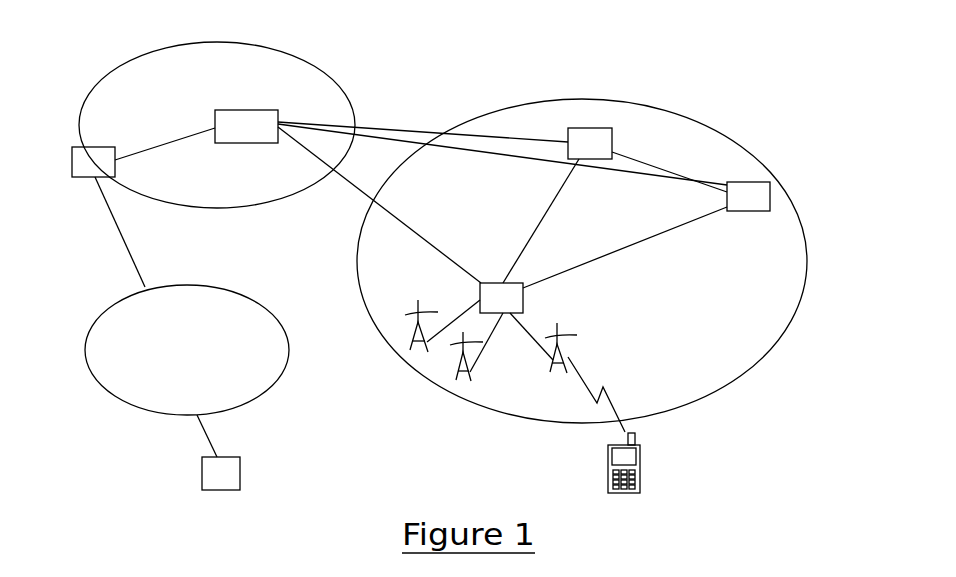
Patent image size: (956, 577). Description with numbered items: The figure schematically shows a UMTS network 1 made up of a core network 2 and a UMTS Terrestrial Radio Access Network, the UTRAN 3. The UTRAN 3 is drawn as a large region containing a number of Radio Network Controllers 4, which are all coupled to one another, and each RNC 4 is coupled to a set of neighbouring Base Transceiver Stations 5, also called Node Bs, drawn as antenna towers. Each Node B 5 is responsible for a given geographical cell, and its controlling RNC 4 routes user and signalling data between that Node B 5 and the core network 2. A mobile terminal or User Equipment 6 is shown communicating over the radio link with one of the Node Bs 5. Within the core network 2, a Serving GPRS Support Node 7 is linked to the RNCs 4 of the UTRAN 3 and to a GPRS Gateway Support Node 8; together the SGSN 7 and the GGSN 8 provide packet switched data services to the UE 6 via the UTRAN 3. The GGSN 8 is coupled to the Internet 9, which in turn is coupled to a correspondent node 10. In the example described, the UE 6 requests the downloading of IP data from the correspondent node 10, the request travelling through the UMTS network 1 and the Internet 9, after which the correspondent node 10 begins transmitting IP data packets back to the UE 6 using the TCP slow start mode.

The UMTS network 1 is at (400, 88).
The core network 2 is at (268, 203).
The UMTS Terrestrial Radio Access Network 3 is at (765, 365).
The Radio Network Controller 4 is at (590, 128).
The Base Transceiver Station 5 is at (550, 380).
The User Equipment 6 is at (640, 460).
The Serving GPRS Support Node 7 is at (237, 110).
The GPRS Gateway Support Node 8 is at (72, 153).
The Internet 9 is at (273, 383).
The correspondent node 10 is at (240, 465).